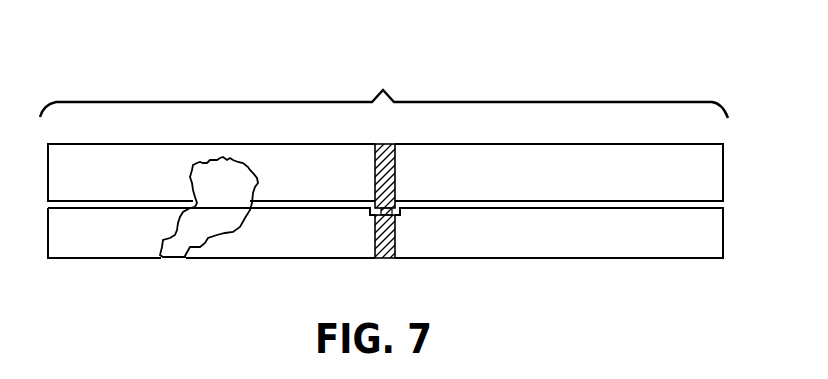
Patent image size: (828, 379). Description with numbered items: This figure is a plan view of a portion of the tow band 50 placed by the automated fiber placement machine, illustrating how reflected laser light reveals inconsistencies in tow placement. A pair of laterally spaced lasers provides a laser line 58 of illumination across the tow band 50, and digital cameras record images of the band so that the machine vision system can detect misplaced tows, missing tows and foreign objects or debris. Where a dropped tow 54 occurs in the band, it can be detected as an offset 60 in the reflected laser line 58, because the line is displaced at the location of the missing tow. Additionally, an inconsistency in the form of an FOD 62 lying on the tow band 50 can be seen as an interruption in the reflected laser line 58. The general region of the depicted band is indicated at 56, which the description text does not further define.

The tow band 50 is at (384, 90).
The dropped tow 54 is at (375, 172).
The semiconductor device 56 is at (384, 168).
The laser line 58 is at (528, 203).
The offset 60 is at (375, 222).
The FOD 62 is at (193, 165).